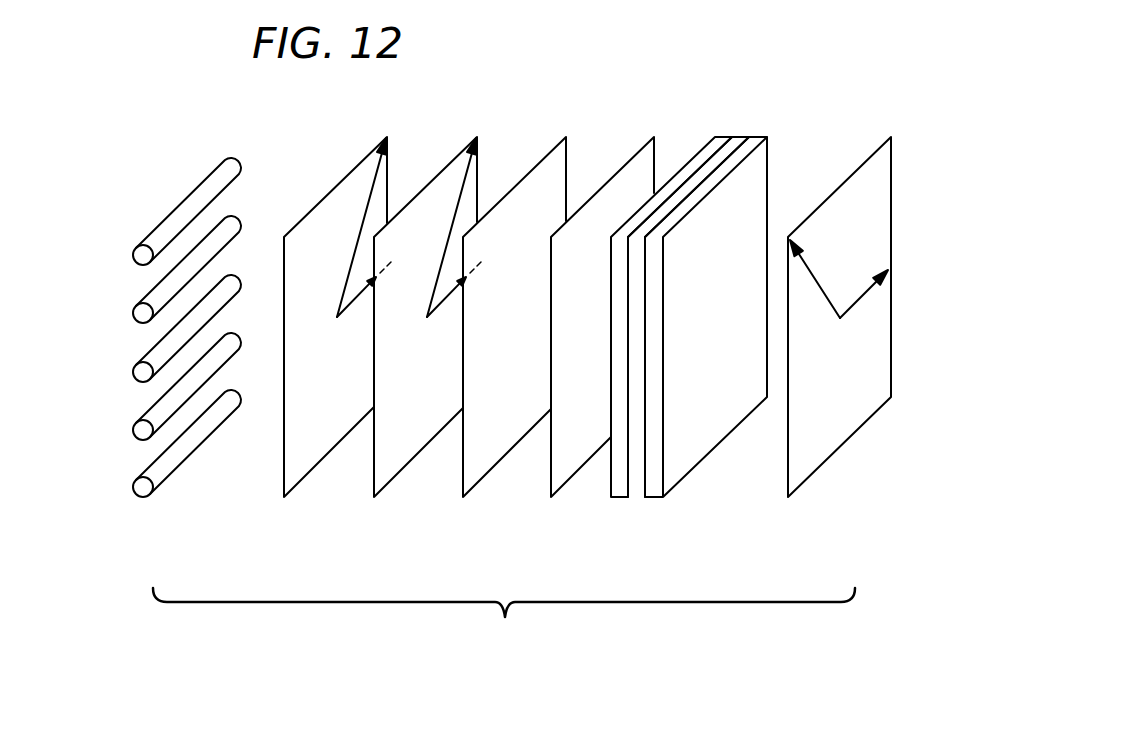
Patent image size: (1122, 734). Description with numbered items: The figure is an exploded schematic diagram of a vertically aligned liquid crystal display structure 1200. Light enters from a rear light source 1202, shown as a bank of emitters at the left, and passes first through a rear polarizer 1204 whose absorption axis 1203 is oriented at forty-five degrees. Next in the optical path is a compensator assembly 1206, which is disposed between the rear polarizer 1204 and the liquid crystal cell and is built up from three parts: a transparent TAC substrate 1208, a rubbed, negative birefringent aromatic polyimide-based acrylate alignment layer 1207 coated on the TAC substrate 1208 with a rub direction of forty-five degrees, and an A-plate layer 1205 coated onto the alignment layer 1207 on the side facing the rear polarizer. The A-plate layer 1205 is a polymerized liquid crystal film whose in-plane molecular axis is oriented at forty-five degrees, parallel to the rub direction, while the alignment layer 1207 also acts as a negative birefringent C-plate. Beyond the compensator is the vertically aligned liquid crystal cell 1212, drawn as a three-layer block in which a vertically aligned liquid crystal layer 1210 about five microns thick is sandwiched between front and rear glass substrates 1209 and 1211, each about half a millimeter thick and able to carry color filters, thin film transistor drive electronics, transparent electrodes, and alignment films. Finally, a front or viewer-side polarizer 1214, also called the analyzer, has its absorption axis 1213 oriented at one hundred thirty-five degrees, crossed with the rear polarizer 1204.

The vertically aligned liquid crystal display structure 1200 is at (818, 48).
The rear light source 1202 is at (183, 198).
The absorption axis 1203 is at (367, 202).
The rear polarizer 1204 is at (292, 322).
The A-plate layer 1205 is at (395, 430).
The compensator assembly 1206 is at (435, 349).
The aromatic polyimide-based acrylate alignment layer 1207 is at (514, 321).
The TAC substrate 1208 is at (635, 180).
The front glass substrate 1209 is at (617, 500).
The vertically aligned liquid crystal layer 1210 is at (707, 170).
The rear glass substrate 1211 is at (652, 500).
The vertically aligned liquid crystal cell 1212 is at (671, 326).
The absorption axis oriented at 135° 1213 is at (832, 303).
The front polarizer 1214 is at (870, 293).